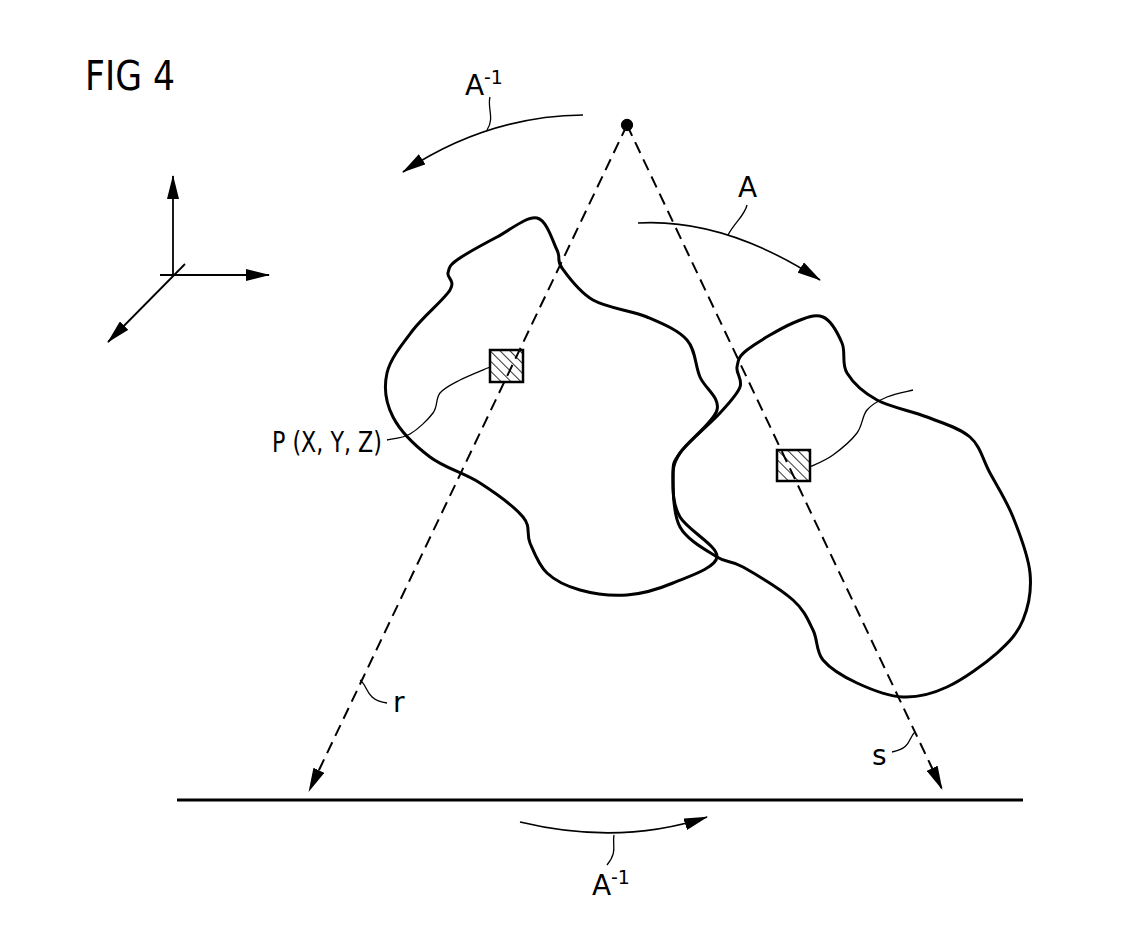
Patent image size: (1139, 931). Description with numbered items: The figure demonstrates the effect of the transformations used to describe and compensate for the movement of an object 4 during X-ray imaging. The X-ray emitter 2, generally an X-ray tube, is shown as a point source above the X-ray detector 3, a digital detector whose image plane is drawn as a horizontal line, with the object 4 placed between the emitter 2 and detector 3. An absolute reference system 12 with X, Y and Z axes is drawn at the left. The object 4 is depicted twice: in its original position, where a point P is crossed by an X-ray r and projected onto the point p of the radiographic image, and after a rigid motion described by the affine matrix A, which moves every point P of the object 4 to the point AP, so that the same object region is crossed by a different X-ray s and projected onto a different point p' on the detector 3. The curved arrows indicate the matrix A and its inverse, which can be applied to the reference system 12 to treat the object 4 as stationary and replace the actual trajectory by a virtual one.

The X-ray emitter 2 is at (628, 118).
The X-ray detector 3 is at (611, 799).
The object 4 is at (995, 647).
The reference system 12 is at (173, 238).